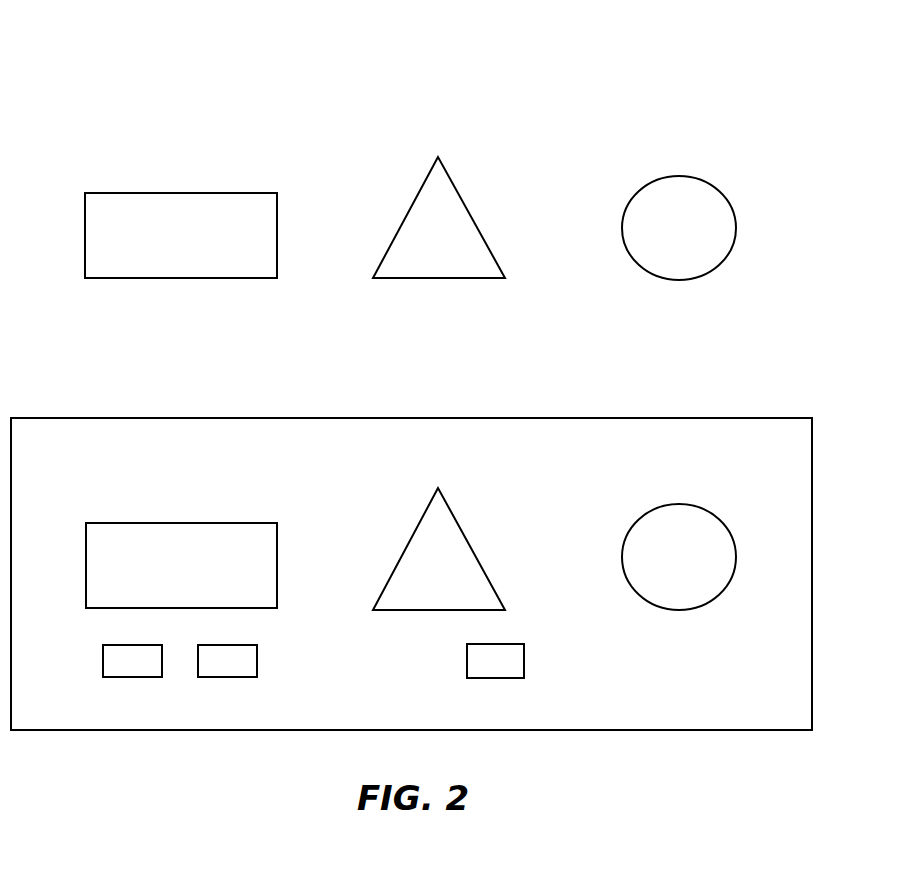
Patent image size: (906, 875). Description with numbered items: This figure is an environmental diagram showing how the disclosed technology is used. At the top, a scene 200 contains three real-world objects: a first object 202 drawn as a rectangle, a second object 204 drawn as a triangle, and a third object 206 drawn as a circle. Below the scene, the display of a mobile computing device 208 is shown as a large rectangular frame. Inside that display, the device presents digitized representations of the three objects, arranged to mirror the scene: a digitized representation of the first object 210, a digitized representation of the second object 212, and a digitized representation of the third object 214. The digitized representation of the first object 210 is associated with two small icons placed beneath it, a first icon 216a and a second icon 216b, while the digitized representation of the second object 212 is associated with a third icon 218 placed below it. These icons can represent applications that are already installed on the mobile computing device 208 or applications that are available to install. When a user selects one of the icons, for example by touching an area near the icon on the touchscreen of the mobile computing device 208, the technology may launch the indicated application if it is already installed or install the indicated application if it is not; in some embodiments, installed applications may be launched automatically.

The scene 200 is at (606, 122).
The first object 202 is at (181, 225).
The second object 204 is at (441, 217).
The third object 206 is at (697, 227).
The mobile computing device 208 is at (411, 565).
The digitized representation of the first object 210 is at (181, 554).
The digitized representation of the second object 212 is at (441, 549).
The digitized representation of the third object 214 is at (697, 557).
The first icon 216a is at (132, 673).
The second icon 216b is at (227, 673).
The third icon 218 is at (495, 672).